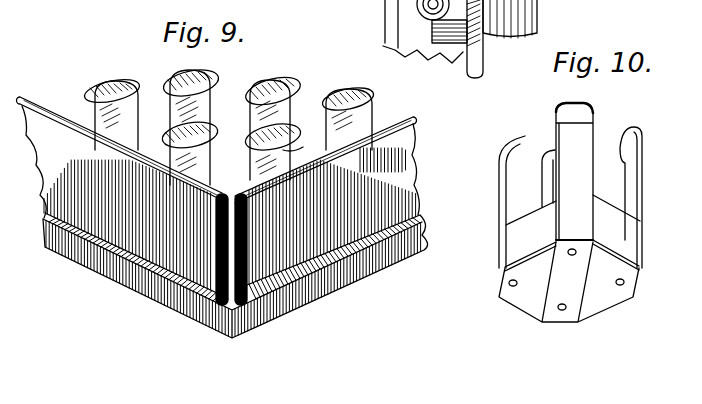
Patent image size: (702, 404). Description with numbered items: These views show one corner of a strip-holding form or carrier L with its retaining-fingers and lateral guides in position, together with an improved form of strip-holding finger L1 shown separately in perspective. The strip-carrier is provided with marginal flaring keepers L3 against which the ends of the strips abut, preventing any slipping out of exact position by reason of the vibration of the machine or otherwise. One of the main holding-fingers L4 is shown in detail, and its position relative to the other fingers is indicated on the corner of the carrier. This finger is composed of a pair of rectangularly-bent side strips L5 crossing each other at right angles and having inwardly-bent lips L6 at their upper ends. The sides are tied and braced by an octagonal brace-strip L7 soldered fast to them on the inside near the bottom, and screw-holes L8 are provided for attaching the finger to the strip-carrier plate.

In FIG. 9, the fence corner section L is at (425, 221).
In FIG. 10, the post L1 is at (478, 44).
In FIG. 9, the marginal flaring keepers L3 is at (70, 114).
In FIG. 9, the main holding-finger L4 is at (256, 120).
In FIG. 10, the main holding-finger L4 is at (630, 244).
In FIG. 9, the rectangularly-bent side strips L5 is at (283, 125).
In FIG. 10, the rectangularly-bent side strips L5 is at (560, 186).
In FIG. 9, the inwardly-bent lips L6 is at (410, 118).
In FIG. 10, the inwardly-bent lips L6 is at (557, 116).
In FIG. 10, the octagonal brace-strip L7 is at (520, 232).
In FIG. 10, the screw-holes L8 is at (619, 278).